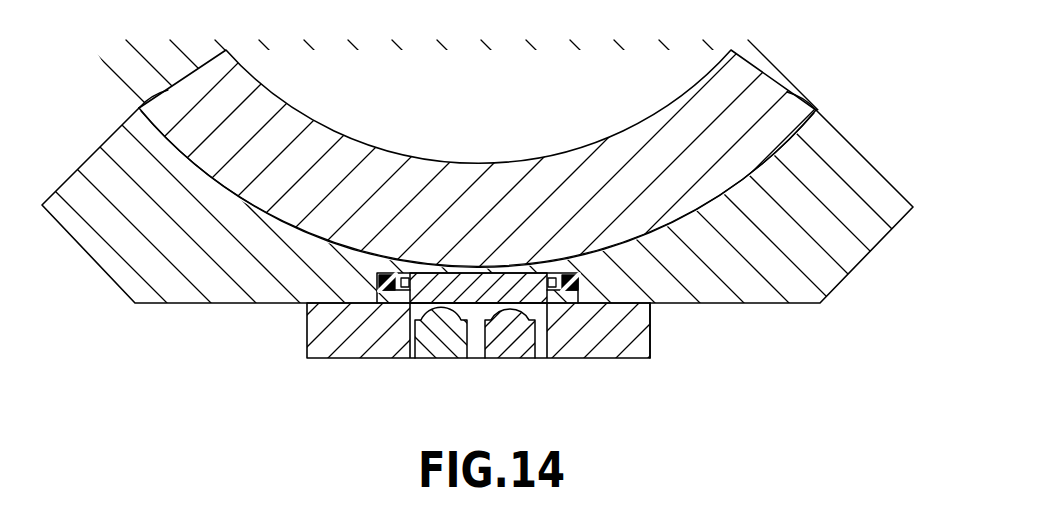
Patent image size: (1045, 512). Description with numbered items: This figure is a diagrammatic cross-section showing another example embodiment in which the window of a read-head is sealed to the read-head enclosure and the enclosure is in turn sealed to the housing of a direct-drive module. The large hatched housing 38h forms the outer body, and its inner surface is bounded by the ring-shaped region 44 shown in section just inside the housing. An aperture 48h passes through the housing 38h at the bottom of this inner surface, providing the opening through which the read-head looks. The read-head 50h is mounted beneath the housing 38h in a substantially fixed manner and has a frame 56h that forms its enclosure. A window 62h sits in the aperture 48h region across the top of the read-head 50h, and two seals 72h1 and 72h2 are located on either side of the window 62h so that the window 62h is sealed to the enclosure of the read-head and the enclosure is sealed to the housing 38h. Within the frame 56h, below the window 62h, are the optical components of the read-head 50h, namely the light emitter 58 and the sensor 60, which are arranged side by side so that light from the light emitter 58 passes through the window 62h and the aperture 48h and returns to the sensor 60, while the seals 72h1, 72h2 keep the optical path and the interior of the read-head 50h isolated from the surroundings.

The housing 38h is at (107, 257).
The inner ring 44 is at (257, 112).
The aperture 48h is at (427, 267).
The window 62h is at (482, 283).
The seal 72h1 is at (569, 278).
The seal 72h2 is at (551, 280).
The read-head 50h is at (306, 341).
The frame 56h is at (650, 350).
The light emitter 58 is at (510, 345).
The sensor 60 is at (436, 345).